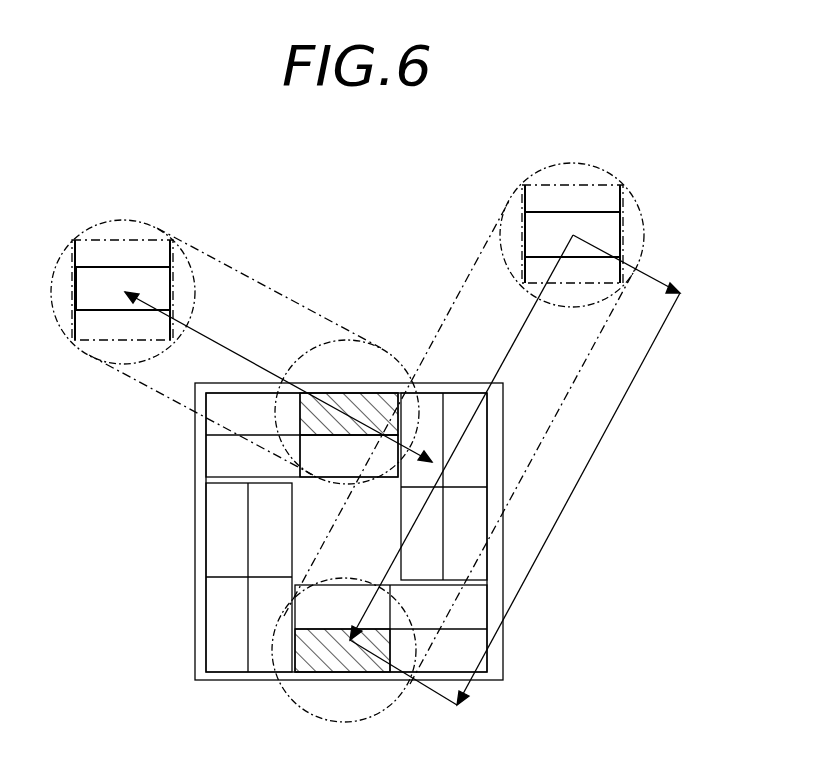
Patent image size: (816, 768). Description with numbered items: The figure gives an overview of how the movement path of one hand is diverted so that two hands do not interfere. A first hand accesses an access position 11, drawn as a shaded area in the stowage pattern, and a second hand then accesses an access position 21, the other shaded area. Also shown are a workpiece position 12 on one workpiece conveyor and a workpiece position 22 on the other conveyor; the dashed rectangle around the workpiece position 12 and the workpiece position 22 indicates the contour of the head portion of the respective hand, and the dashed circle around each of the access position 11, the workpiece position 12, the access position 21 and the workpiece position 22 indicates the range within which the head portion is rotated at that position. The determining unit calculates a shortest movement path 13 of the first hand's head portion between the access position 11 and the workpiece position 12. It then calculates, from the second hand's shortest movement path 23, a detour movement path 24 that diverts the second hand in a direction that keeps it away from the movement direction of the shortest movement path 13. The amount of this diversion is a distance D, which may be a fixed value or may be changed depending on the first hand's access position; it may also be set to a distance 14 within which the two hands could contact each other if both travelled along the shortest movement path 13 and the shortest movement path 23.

The access position 11 is at (360, 391).
The workpiece position 12 is at (122, 267).
The shortest movement path 13 is at (222, 341).
The distance 14 is at (386, 478).
The access position 21 is at (327, 668).
The workpiece position 22 is at (574, 212).
The shortest movement path 23 is at (522, 323).
The detour movement path 24 is at (597, 448).
The distance D is at (648, 272).